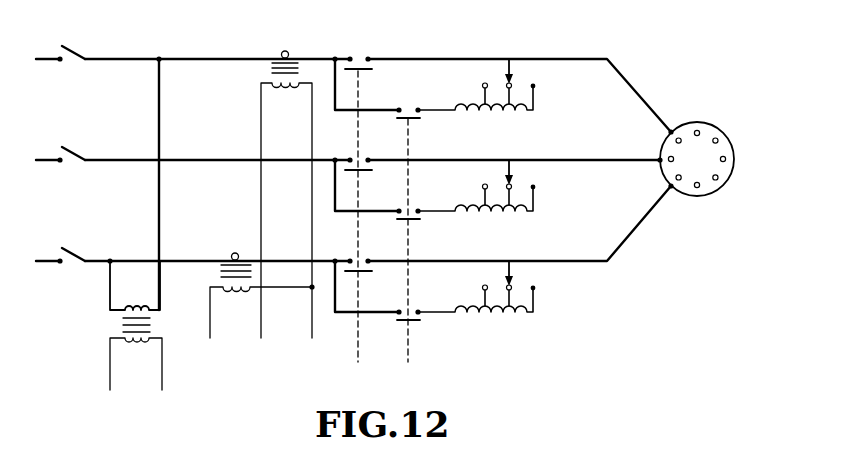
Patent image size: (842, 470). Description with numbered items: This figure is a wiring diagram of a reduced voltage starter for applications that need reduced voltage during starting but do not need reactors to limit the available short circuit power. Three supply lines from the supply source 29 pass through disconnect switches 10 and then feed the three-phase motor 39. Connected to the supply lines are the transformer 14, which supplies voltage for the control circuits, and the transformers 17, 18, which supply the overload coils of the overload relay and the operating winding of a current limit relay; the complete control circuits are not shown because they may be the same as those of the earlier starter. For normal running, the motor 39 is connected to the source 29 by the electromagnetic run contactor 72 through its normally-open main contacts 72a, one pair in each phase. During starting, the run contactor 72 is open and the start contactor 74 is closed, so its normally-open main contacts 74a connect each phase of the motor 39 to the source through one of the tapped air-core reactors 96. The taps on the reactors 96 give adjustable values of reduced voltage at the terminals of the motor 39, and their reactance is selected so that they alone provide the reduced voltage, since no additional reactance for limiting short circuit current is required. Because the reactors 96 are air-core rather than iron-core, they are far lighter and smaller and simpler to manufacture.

The disconnect switches 10 is at (72, 58).
The transformer 14 is at (90, 340).
The transformer 17 is at (200, 293).
The transformer 18 is at (238, 88).
The supply source 29 is at (56, 63).
The motor 39 is at (700, 199).
The run contactor 72 is at (357, 347).
The main contacts 72a is at (358, 57).
The starting contactor 74 is at (409, 348).
The main contacts 74a is at (407, 112).
The tapped air-core reactors 96 is at (486, 112).